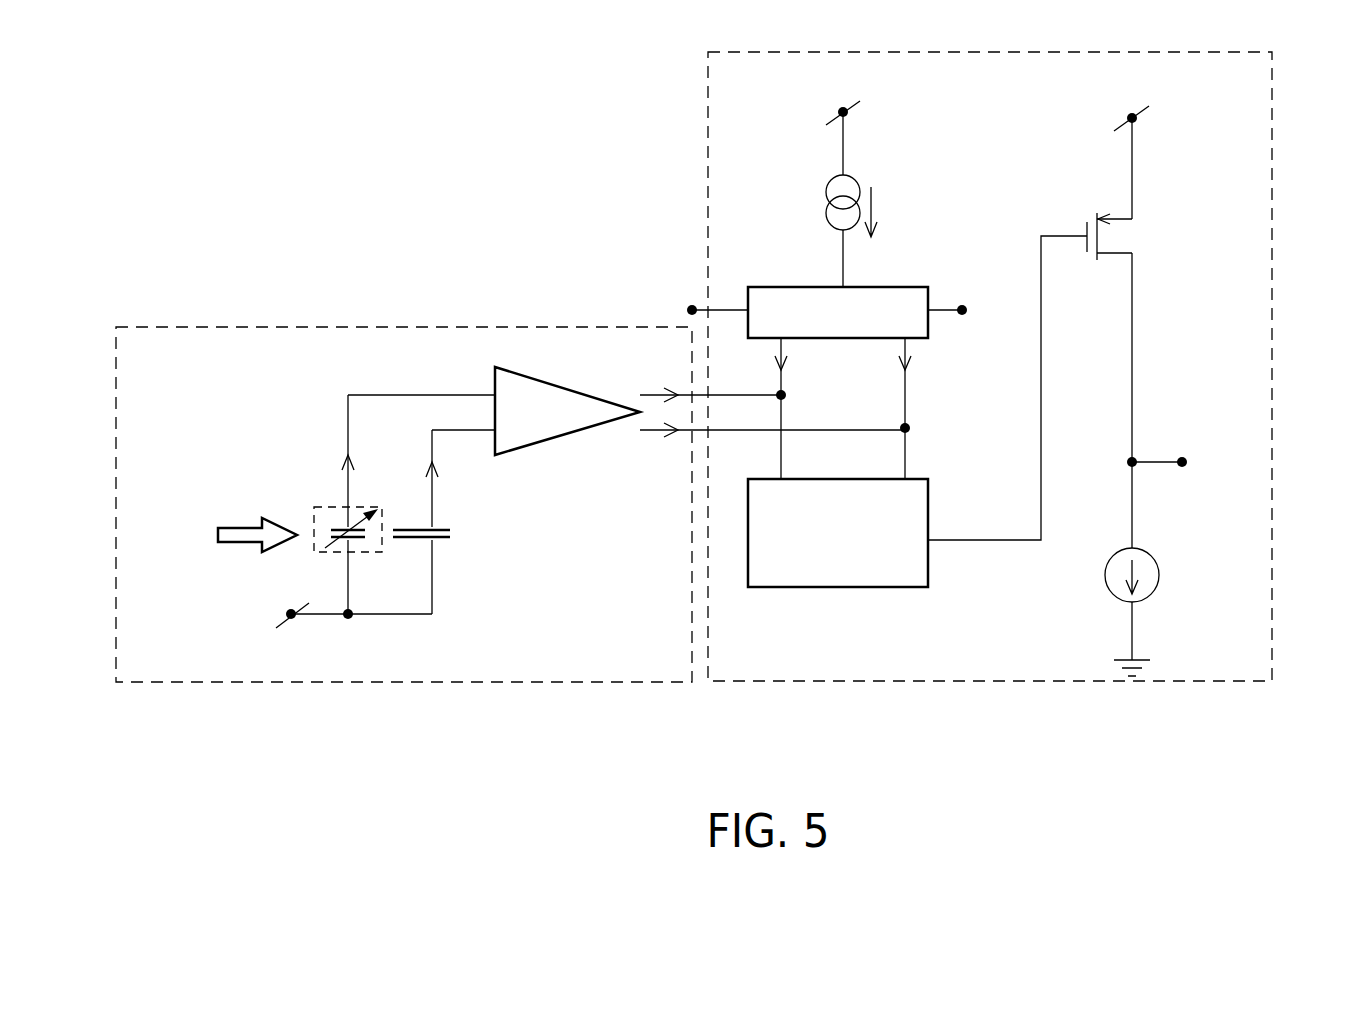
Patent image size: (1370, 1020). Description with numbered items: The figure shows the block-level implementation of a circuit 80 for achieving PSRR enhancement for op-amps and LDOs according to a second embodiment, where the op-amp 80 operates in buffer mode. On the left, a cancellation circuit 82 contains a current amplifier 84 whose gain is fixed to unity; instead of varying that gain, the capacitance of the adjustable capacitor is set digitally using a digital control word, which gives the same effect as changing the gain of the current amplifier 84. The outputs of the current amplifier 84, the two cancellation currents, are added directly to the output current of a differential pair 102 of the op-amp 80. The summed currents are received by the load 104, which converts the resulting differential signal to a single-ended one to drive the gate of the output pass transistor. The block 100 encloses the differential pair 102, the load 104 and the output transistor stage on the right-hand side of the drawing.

The circuit 80 is at (602, 102).
The cancellation circuit 82 is at (425, 327).
The current amplifier 84 is at (527, 447).
The output stage circuit 100 is at (1272, 105).
The differential pair 102 is at (900, 287).
The load 104 is at (928, 497).